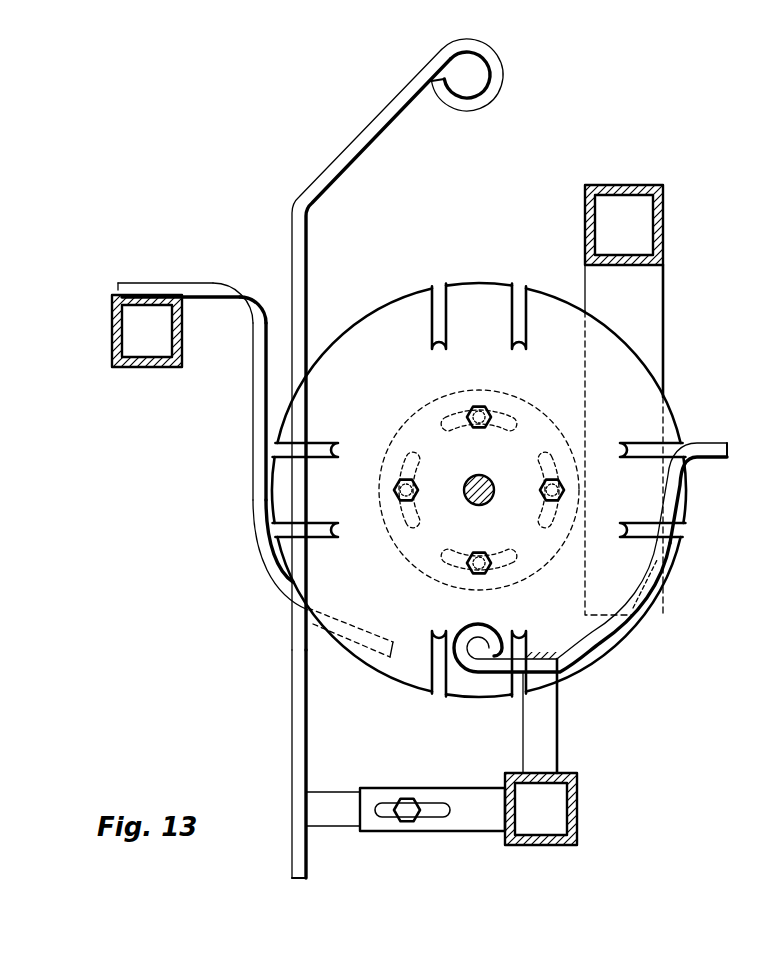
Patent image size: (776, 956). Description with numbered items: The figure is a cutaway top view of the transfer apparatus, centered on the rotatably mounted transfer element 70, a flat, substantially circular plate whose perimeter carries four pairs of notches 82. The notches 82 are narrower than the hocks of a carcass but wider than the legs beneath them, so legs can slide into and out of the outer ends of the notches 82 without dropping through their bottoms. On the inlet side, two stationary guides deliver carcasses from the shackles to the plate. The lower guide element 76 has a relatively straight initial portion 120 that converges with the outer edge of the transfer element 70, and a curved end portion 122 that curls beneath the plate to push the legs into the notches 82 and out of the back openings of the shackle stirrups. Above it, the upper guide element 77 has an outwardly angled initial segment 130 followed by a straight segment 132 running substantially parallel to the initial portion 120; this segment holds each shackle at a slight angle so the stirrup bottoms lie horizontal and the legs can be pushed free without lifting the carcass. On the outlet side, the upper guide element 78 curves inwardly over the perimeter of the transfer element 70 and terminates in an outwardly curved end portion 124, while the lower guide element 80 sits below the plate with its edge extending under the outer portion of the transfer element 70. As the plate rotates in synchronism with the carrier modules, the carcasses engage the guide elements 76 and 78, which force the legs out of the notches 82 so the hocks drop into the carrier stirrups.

The rotatably mounted transfer element 70 is at (402, 353).
The notches 82 is at (516, 320).
The upper guide element 77 is at (368, 133).
The outwardly angled initial segment 130 is at (388, 117).
The straight segment 132 is at (297, 731).
The lower guide element 76 is at (254, 382).
The straight initial portion 120 is at (262, 323).
The curved end portion 122 is at (285, 582).
The lower guide element 80 is at (638, 306).
The outwardly curved end portion 124 is at (697, 430).
The upper guide element 78 is at (577, 647).